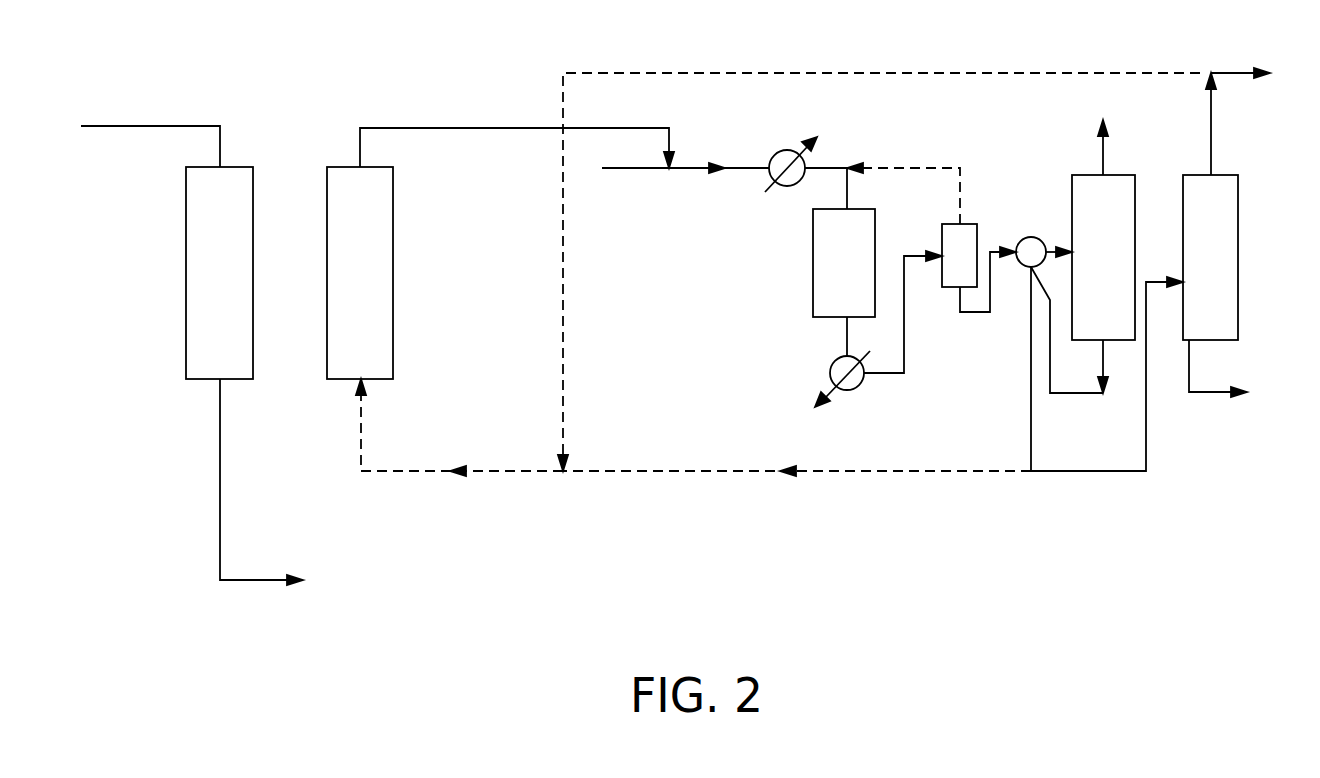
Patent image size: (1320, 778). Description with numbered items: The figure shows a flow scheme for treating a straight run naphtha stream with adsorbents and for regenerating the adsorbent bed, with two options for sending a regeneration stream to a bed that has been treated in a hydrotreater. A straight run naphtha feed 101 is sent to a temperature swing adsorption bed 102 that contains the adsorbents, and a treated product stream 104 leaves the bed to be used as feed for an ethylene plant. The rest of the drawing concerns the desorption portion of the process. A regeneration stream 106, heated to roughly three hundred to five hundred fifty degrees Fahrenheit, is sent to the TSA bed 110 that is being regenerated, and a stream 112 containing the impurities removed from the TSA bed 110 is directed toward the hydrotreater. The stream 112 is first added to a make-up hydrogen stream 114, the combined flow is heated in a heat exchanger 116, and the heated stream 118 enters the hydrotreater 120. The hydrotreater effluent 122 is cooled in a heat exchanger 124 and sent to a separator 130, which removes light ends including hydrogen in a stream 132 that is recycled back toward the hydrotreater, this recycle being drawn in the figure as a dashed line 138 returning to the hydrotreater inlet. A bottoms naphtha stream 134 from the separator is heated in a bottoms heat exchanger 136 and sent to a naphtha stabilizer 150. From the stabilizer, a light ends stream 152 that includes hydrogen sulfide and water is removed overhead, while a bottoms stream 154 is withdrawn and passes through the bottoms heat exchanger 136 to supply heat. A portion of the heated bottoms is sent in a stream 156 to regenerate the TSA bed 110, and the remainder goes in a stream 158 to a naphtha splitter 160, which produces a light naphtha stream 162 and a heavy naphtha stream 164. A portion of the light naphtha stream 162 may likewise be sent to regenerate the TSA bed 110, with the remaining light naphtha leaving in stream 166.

The straight run naphtha feed 101 is at (151, 126).
The temperature swing adsorption bed 102 is at (243, 284).
The treated product stream 104 is at (245, 582).
The regeneration stream 106 is at (361, 425).
The TSA bed 110 is at (386, 284).
The stream containing impurities 112 is at (449, 126).
The make-up hydrogen stream 114 is at (641, 170).
The heat exchanger 116 is at (783, 149).
The heated stream 118 is at (836, 165).
The hydrotreater 120 is at (868, 279).
The effluent 122 is at (847, 337).
The heat exchanger 124 is at (855, 390).
The separator 130 is at (957, 223).
The light ends stream 132 is at (898, 375).
The bottoms naphtha stream 134 is at (975, 318).
The bottoms heat exchanger 136 is at (1032, 230).
The separator overhead recycle stream 138 is at (936, 165).
The naphtha stabilizer 150 is at (1127, 261).
The light ends stream 152 is at (1105, 153).
The bottoms stream 154 is at (1075, 395).
The stream 156 is at (872, 473).
The stream 158 is at (1085, 473).
The naphtha splitter 160 is at (1233, 259).
The light naphtha stream 162 is at (1213, 125).
The heavy naphtha stream 164 is at (1200, 394).
The stream 166 is at (1227, 70).